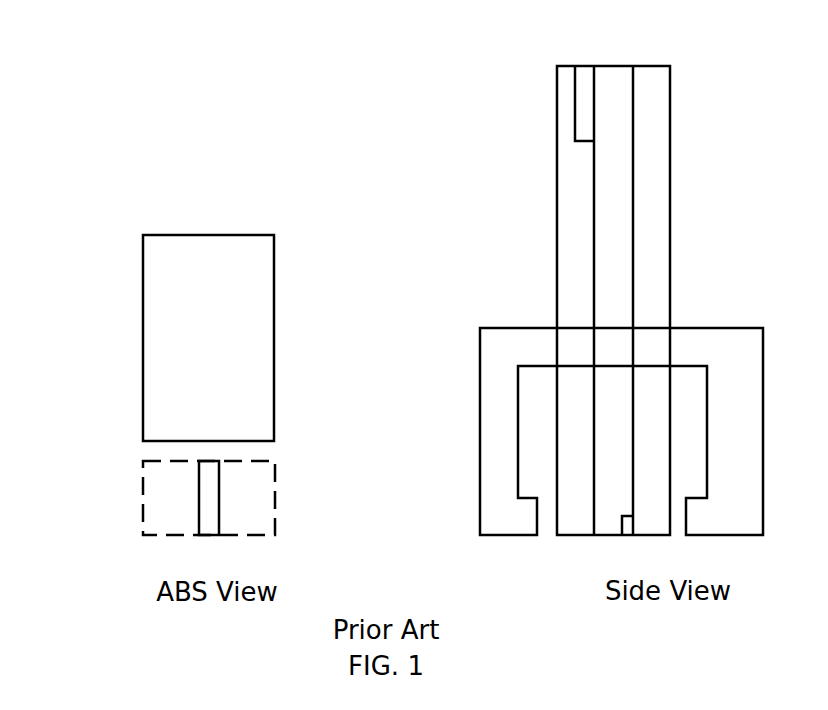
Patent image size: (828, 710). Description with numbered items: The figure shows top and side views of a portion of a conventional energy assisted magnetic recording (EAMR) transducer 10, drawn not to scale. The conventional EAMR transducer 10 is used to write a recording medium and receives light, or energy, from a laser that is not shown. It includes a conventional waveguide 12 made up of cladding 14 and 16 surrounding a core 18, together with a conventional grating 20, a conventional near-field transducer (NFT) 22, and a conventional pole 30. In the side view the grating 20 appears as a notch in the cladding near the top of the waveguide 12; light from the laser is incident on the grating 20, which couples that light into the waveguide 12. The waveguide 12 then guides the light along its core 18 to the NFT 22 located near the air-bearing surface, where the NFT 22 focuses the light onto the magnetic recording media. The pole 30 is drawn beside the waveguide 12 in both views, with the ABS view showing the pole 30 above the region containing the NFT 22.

The energy assisted magnetic recording (EAMR) transducer 10 is at (371, 23).
The waveguide 12 is at (705, 180).
The cladding 14 is at (670, 113).
The cladding 16 is at (557, 162).
The core 18 is at (633, 123).
The grating 20 is at (587, 66).
The near-field transducer (NFT) 22 is at (85, 498).
The pole 30 is at (274, 302).